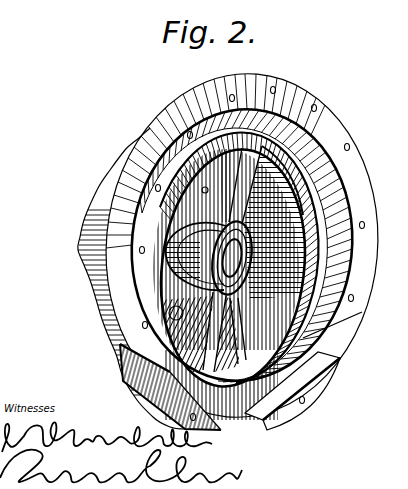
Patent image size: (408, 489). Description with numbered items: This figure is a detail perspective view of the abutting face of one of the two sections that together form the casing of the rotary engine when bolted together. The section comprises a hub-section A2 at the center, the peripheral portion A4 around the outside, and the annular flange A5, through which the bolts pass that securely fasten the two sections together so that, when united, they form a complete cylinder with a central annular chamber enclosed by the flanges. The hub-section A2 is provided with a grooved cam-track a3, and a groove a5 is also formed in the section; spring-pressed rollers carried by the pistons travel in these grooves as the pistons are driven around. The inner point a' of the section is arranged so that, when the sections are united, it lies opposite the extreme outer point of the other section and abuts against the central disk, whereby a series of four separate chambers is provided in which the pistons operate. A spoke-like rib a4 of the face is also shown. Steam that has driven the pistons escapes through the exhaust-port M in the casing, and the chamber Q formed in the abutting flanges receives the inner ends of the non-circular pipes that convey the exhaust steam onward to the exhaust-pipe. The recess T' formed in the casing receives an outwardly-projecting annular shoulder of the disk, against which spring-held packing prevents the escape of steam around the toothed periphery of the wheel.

The peripheral portion A4 is at (121, 158).
The annular flange A5 is at (105, 256).
The recess T' is at (252, 243).
The groove a5 is at (254, 192).
The upper spoke a4 is at (234, 185).
The inner point a' is at (232, 260).
The hub-section A2 is at (239, 264).
The grooved cam-track a3 is at (195, 228).
The exhaust-port M is at (184, 308).
The chamber Q is at (127, 376).